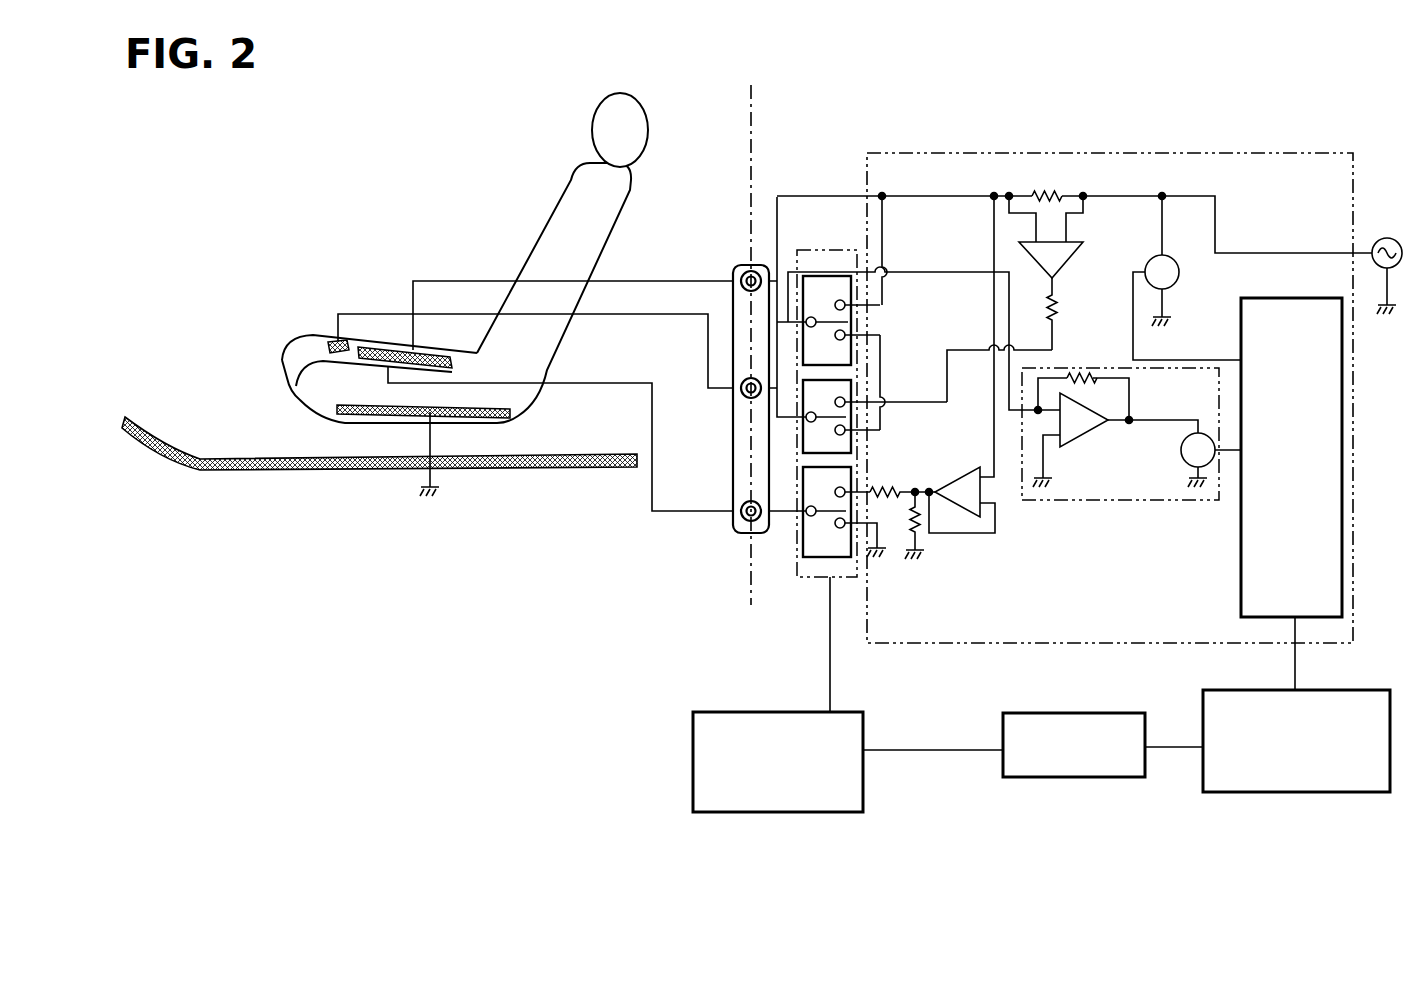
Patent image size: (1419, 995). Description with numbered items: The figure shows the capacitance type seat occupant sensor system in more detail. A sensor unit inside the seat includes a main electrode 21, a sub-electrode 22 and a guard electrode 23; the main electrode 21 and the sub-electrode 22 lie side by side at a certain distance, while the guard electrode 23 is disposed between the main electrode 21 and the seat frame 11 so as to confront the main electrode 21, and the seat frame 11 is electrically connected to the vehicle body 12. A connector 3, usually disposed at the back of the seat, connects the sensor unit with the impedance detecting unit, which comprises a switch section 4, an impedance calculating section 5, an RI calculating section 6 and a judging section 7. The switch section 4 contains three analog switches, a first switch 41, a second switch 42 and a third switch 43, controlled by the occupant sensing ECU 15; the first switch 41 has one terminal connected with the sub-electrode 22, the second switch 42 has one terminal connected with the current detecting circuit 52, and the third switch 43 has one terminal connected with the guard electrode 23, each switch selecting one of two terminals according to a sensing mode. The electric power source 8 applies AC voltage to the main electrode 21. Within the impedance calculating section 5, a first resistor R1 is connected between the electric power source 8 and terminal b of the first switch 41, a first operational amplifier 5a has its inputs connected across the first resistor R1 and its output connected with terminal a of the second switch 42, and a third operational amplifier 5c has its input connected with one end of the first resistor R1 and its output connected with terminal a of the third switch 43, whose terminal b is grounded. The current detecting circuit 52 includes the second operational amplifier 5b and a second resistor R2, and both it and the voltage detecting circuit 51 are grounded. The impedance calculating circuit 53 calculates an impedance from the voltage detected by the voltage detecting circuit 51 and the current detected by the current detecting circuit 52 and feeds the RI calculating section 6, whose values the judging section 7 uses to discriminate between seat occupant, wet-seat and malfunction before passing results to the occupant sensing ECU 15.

The connector 3 is at (733, 515).
The switch section 4 is at (861, 427).
The impedance calculating section 5 is at (1208, 152).
The first operational amplifier 5a is at (1046, 273).
The second operational amplifier 5b is at (1115, 432).
The third operational amplifier 5c is at (932, 513).
The RI calculating section 6 is at (1203, 710).
The judging section 7 is at (1057, 713).
The electric power source 8 is at (1387, 238).
The seat frame 11 is at (352, 423).
The vehicle body 12 is at (187, 450).
The occupant sensing ECU 15 is at (693, 748).
The main electrode 21 is at (383, 345).
The sub-electrode 22 is at (303, 333).
The guard electrode 23 is at (296, 387).
The first switch 41 is at (820, 310).
The second switch 42 is at (860, 443).
The third switch 43 is at (806, 515).
The voltage detecting circuit 51 is at (1180, 274).
The current detecting circuit 52 is at (1131, 472).
The impedance calculating circuit 53 is at (1241, 545).
The first resistor R1 is at (1046, 192).
The second resistor R2 is at (1085, 382).